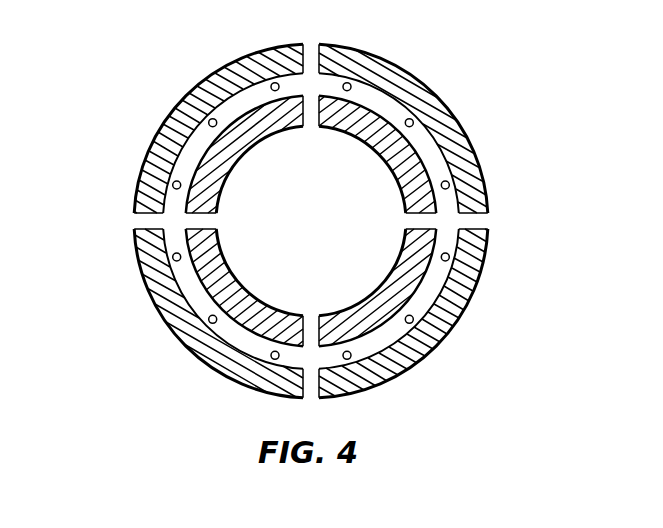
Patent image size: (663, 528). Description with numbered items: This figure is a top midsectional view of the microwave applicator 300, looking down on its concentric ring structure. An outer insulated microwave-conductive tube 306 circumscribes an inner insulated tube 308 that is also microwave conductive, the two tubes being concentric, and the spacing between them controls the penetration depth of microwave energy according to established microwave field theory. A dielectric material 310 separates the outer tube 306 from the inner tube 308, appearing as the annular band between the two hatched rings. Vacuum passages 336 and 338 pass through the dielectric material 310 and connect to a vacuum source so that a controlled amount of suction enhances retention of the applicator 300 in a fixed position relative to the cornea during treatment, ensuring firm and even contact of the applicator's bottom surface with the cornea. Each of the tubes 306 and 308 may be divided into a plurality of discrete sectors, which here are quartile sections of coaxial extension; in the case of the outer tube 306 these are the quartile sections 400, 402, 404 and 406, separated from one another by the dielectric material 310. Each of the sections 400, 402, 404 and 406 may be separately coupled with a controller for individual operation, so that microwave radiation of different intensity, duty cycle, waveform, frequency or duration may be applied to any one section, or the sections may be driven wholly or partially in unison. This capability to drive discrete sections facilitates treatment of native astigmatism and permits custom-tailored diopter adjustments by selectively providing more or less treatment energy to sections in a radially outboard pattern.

The applicator 300 is at (484, 49).
The outer insulated microwave-conductive tube 306 is at (134, 261).
The inner insulated tube 308 is at (386, 161).
The dielectric material 310 is at (440, 166).
The vacuum passage 336 is at (295, 199).
The vacuum passage 338 is at (351, 362).
The quartile section 400 is at (457, 118).
The quartile section 402 is at (470, 300).
The quartile section 404 is at (174, 343).
The quartile section 406 is at (153, 131).